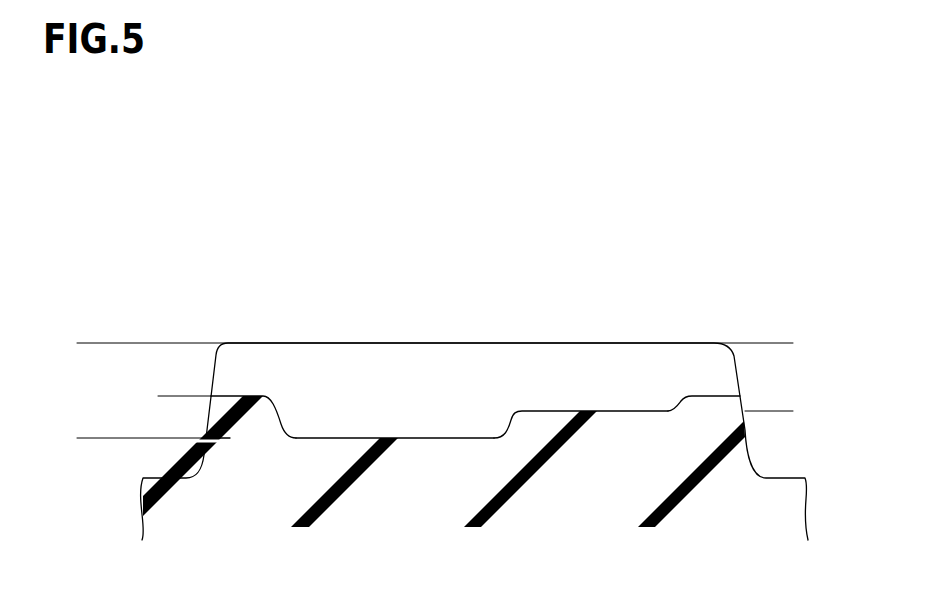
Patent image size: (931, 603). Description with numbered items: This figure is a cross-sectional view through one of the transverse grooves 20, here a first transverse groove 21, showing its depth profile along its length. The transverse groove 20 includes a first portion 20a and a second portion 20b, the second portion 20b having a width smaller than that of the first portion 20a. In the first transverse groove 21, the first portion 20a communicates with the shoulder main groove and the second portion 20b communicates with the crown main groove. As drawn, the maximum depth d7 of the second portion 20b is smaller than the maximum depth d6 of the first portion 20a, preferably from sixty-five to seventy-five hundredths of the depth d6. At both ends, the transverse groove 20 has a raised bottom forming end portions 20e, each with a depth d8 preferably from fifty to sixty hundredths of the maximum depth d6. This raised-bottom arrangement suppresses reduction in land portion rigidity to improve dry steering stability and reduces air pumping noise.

The transverse groove 20 is at (474, 366).
The first transverse groove 21 is at (567, 255).
The first portion 20a is at (377, 434).
The second portion 20b is at (560, 406).
The end portion 20e is at (237, 391).
The maximum depth of the first portion d6 is at (83, 344).
The maximum depth of the second portion d7 is at (788, 344).
The depth of the end portion d8 is at (165, 344).